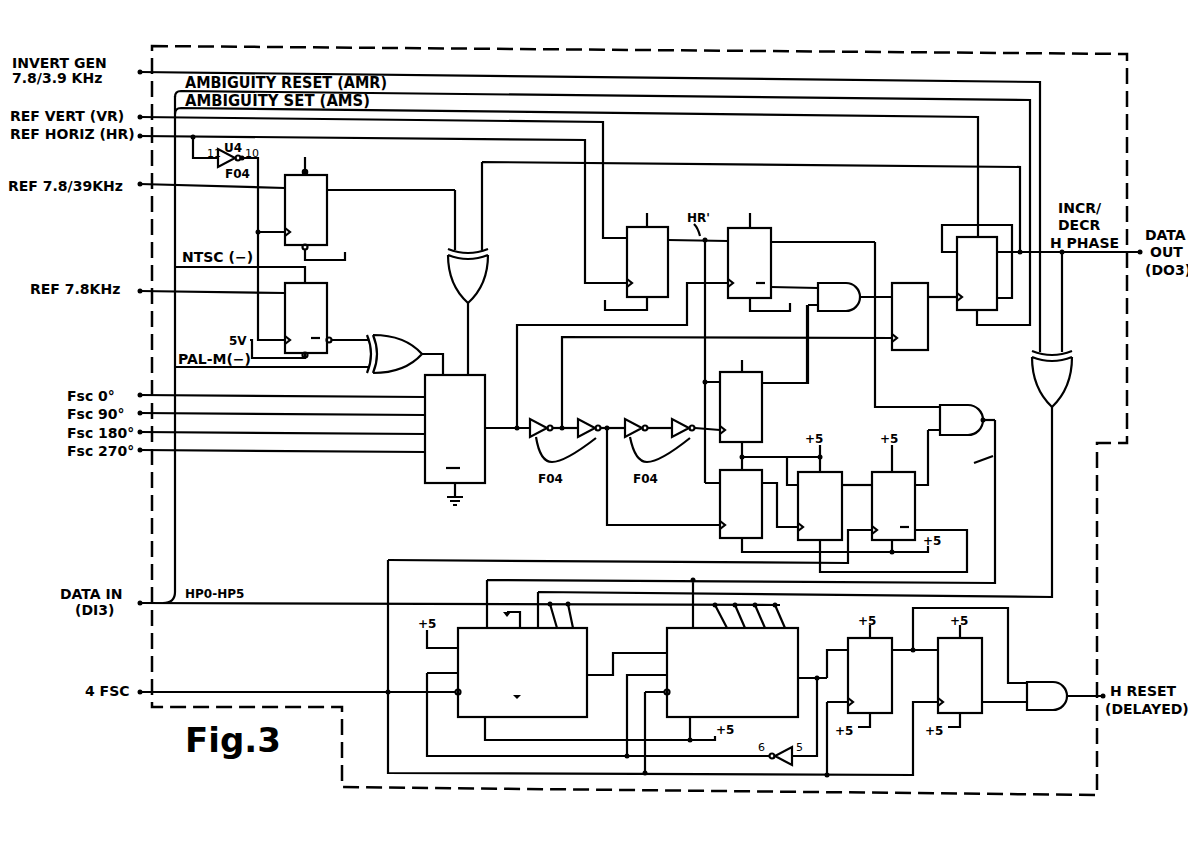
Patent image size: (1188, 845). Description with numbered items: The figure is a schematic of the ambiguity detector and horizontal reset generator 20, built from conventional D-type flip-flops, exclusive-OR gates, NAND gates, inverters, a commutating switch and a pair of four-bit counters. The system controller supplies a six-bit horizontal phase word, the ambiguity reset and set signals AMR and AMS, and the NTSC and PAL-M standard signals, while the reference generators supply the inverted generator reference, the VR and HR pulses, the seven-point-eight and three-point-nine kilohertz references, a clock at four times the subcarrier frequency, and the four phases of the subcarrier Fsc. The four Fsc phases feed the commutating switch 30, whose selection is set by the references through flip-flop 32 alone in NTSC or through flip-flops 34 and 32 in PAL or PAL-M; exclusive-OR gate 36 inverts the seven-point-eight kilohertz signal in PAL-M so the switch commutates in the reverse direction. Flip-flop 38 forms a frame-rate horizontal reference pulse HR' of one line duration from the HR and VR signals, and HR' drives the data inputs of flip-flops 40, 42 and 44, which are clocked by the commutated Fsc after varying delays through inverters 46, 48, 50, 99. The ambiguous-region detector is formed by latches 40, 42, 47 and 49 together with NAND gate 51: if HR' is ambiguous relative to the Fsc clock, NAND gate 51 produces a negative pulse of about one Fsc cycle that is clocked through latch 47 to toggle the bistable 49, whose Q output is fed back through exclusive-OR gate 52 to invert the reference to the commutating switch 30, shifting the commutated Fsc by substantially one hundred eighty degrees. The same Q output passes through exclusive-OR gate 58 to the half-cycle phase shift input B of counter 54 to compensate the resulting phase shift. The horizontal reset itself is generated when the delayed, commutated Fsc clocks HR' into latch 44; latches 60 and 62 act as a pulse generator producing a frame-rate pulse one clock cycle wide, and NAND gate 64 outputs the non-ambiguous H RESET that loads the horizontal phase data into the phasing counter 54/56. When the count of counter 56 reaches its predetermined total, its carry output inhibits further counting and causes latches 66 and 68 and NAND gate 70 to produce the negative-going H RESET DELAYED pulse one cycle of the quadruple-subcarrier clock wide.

The ambiguity detector and horizontal reset generator 20 is at (816, 53).
The commutating switch 30 is at (485, 379).
The flip-flop 32 is at (327, 212).
The flip-flop 34 is at (327, 286).
The exclusive-OR gate 36 is at (404, 337).
The flip-flop 38 is at (669, 266).
The flip-flop 40 is at (771, 273).
The flip-flop 42 is at (762, 407).
The flip-flop 44 is at (720, 503).
The inverter 46 is at (533, 418).
The latch 47 is at (916, 283).
The inverter 48 is at (581, 418).
The ambiguity detector bistable 49 is at (957, 276).
The inverter 50 is at (628, 418).
The NAND gate 51 is at (850, 283).
The exclusive-OR gate 52 is at (449, 271).
The counter 54 is at (589, 642).
The counter 56 is at (798, 637).
The exclusive-OR gate 58 is at (1032, 360).
The latch 60 is at (842, 512).
The latch 62 is at (915, 509).
The NAND gate 64 is at (962, 405).
The latch 66 is at (892, 680).
The latch 68 is at (938, 689).
The NAND gate 70 is at (1050, 682).
The inverter 99 is at (678, 418).